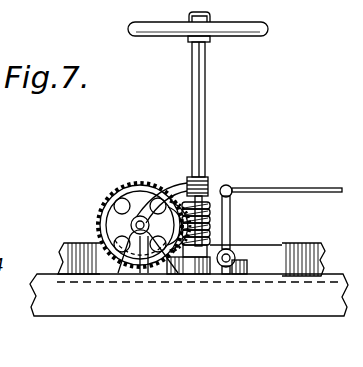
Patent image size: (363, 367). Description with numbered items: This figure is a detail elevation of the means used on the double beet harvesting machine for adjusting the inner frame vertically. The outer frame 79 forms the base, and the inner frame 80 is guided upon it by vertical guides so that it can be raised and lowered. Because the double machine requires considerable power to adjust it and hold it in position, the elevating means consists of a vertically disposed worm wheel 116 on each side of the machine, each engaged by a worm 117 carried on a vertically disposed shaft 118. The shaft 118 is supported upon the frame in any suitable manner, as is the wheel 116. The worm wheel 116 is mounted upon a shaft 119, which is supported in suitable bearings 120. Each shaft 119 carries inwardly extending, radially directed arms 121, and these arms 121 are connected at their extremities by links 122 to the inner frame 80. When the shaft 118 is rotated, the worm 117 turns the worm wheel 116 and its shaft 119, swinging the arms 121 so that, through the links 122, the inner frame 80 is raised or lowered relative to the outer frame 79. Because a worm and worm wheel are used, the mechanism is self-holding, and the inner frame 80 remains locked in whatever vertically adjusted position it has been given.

The worm wheel 116 is at (107, 196).
The worm 117 is at (211, 217).
The vertically disposed shaft 118 is at (199, 115).
The shaft 119 is at (135, 224).
The bearings 120 is at (106, 270).
The radially directed arms 121 is at (209, 190).
The links 122 is at (231, 222).
The inner frame 80 is at (285, 247).
The outer frame 79 is at (310, 300).